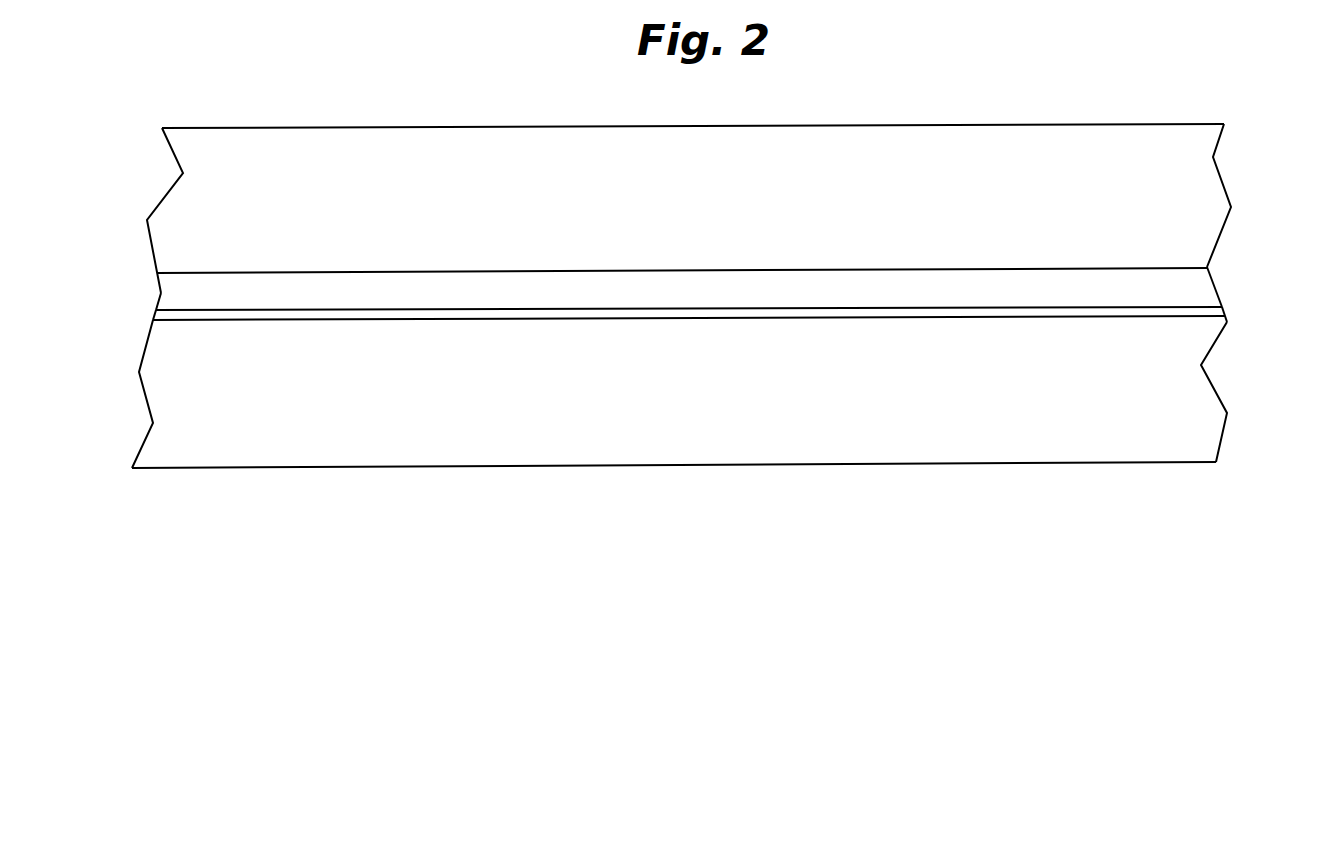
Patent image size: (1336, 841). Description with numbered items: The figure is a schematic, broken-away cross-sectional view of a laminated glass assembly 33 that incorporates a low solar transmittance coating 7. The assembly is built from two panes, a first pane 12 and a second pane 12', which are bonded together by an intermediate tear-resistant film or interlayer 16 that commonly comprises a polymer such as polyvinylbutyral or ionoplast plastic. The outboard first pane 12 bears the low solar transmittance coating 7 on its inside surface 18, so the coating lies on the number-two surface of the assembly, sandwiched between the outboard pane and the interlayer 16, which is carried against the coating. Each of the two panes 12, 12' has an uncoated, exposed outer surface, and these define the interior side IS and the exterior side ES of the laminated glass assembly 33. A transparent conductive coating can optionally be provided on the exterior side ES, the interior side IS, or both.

The second pane 12' is at (689, 189).
The first pane 12 is at (679, 413).
The interlayer 16 is at (1197, 285).
The interior surface 18 is at (188, 320).
The low solar transmittance coating 7 is at (1204, 310).
The laminated glass assembly 33 is at (696, 306).
The interior side IS is at (817, 108).
The exterior side ES is at (682, 495).